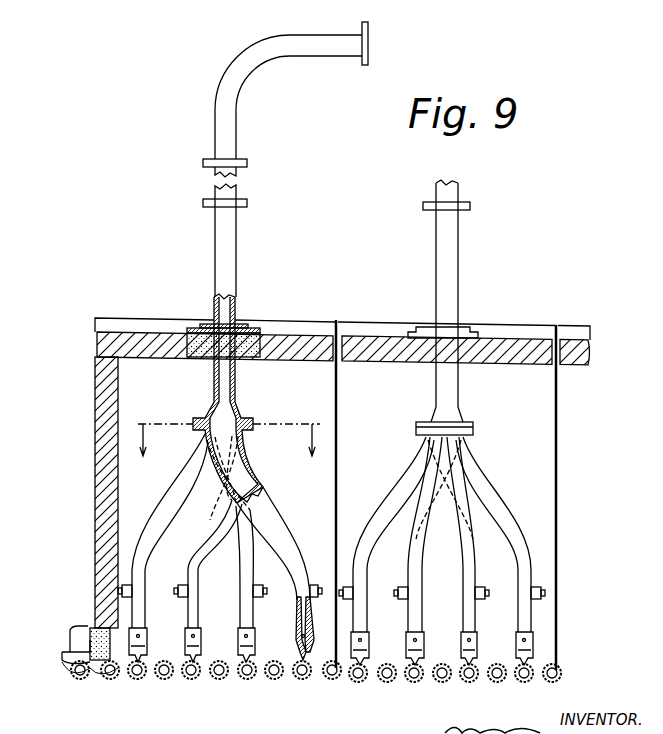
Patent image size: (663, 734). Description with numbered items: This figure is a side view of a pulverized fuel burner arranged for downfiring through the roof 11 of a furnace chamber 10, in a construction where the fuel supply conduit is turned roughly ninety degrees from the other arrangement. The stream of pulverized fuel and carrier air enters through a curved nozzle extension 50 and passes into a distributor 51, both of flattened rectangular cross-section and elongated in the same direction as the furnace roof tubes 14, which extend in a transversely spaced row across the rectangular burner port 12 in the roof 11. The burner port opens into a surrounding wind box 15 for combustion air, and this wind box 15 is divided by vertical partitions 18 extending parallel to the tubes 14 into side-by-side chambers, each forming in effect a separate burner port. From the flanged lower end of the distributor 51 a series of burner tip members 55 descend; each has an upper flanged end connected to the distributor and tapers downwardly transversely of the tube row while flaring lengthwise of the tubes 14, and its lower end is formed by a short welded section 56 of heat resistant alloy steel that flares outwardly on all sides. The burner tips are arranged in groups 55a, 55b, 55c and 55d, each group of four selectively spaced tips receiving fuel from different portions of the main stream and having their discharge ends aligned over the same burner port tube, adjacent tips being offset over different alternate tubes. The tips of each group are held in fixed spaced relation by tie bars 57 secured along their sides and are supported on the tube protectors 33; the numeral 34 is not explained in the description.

The curved nozzle extension 50 is at (255, 77).
The distributor 51 is at (240, 393).
The furnace chamber 10 is at (226, 453).
The wind box 15 is at (108, 538).
The roof 11 is at (73, 650).
The burner tip members 55 is at (290, 543).
The welded section 56 is at (240, 640).
The tube protectors 33 is at (306, 656).
The vertical partitions 18 is at (338, 458).
The burner port 12 is at (150, 678).
The fluid heating tubes 14 is at (220, 680).
The roller 34 is at (274, 660).
The tie bars 57 is at (541, 591).
The burner tip group 55a is at (488, 506).
The burner tip group 55b is at (472, 576).
The burner tip group 55c is at (433, 575).
The burner tip group 55d is at (375, 578).